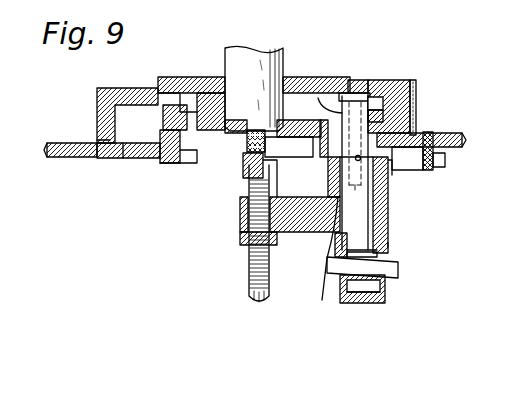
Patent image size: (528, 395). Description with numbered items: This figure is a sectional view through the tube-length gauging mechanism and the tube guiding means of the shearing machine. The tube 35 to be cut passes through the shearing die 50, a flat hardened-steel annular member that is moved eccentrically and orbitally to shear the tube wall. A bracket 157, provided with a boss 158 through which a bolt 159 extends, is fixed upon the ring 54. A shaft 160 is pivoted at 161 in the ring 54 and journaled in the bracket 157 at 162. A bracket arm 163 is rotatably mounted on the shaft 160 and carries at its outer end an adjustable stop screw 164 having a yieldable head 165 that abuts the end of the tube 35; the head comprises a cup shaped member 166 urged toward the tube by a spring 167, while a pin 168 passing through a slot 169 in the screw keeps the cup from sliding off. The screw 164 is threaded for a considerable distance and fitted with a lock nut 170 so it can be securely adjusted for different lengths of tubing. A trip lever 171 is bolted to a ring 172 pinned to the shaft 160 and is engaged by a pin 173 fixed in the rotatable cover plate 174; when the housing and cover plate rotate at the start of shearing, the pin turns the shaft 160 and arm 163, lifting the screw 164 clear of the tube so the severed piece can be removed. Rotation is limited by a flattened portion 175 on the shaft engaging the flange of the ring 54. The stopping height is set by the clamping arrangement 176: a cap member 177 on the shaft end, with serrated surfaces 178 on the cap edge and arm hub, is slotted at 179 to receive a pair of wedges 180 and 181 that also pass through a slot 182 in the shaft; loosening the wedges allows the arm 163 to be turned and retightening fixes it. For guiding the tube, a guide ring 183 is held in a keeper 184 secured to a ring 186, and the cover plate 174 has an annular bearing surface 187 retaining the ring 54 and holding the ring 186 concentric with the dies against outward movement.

The tube 35 is at (284, 58).
The shearing die 50 is at (298, 78).
The ring 54 is at (416, 88).
The bracket 157 is at (392, 182).
The boss 158 is at (342, 96).
The bolt 159 is at (375, 90).
The shaft 160 is at (363, 215).
The pivot 161 is at (352, 100).
The journal 162 is at (375, 190).
The bracket arm 163 is at (312, 220).
The adjustable stop screw 164 is at (255, 272).
The yieldable head 165 is at (246, 157).
The cup shaped member 166 is at (232, 150).
The spring 167 is at (263, 142).
The pin 168 is at (268, 158).
The slot 169 is at (268, 165).
The lock nut 170 is at (240, 244).
The trip lever 171 is at (445, 160).
The ring 172 is at (412, 136).
The pin 173 is at (435, 152).
The cover plate 174 is at (88, 149).
The flattened portion 175 is at (378, 116).
The clamping arrangement 176 is at (396, 245).
The cap member 177 is at (390, 245).
The serrated surfaces 178 is at (328, 262).
The slot 179 is at (385, 290).
The wedge 180 is at (392, 272).
The wedge 181 is at (395, 265).
The slot 182 is at (390, 256).
The guide ring 183 is at (198, 162).
The keeper 184 is at (172, 92).
The ring 186 is at (130, 160).
The annular bearing surface 187 is at (112, 142).